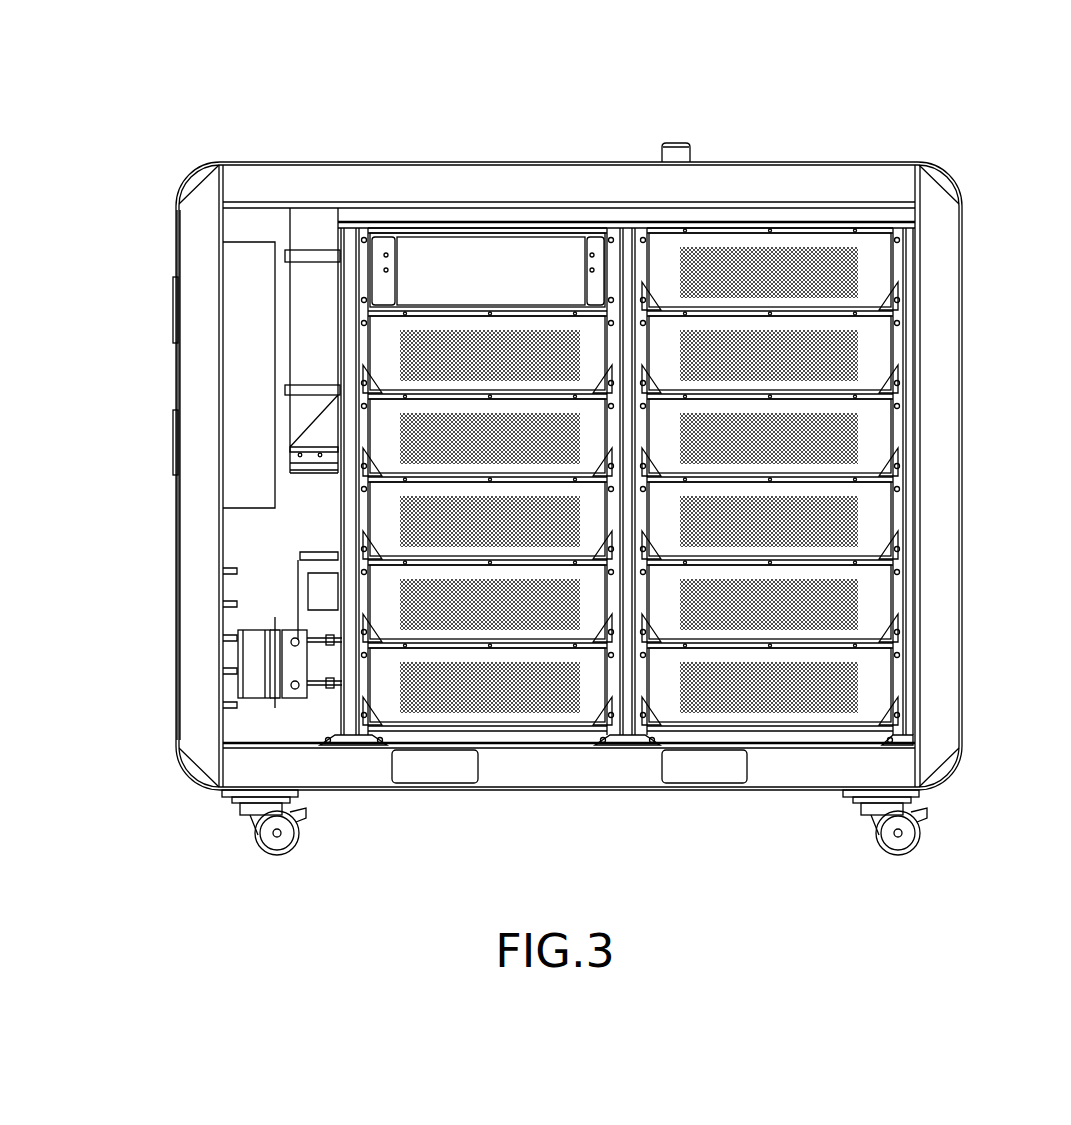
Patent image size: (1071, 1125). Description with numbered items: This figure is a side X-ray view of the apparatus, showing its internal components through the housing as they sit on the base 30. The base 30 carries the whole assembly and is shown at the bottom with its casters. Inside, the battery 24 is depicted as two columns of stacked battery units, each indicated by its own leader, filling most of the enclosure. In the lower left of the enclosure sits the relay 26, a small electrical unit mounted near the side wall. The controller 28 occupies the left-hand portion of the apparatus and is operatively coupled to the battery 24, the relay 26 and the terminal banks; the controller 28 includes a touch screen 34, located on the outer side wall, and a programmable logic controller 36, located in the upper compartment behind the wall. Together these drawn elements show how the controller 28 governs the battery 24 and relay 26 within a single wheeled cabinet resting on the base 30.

The battery 24 is at (445, 685).
The relay 26 is at (260, 680).
The controller 28 is at (260, 65).
The base 30 is at (168, 778).
The touch screen 34 is at (170, 307).
The programmable logic controller 36 is at (437, 262).